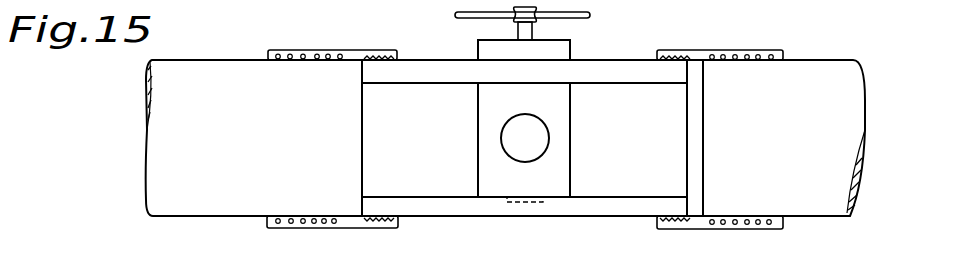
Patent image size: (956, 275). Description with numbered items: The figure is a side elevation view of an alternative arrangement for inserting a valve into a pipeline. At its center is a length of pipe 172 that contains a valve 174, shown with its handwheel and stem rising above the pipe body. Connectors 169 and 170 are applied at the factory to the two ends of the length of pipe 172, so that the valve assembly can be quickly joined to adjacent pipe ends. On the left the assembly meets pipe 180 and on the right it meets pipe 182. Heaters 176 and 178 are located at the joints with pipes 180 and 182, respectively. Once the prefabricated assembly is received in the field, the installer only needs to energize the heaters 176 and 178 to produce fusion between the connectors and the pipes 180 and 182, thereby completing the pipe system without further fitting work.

The connector 169 is at (378, 37).
The connector 170 is at (698, 53).
The length of pipe 172 is at (503, 215).
The valve 174 is at (563, 113).
The heater 176 is at (305, 50).
The heater 178 is at (753, 52).
The pipe 180 is at (276, 130).
The pipe 182 is at (791, 130).